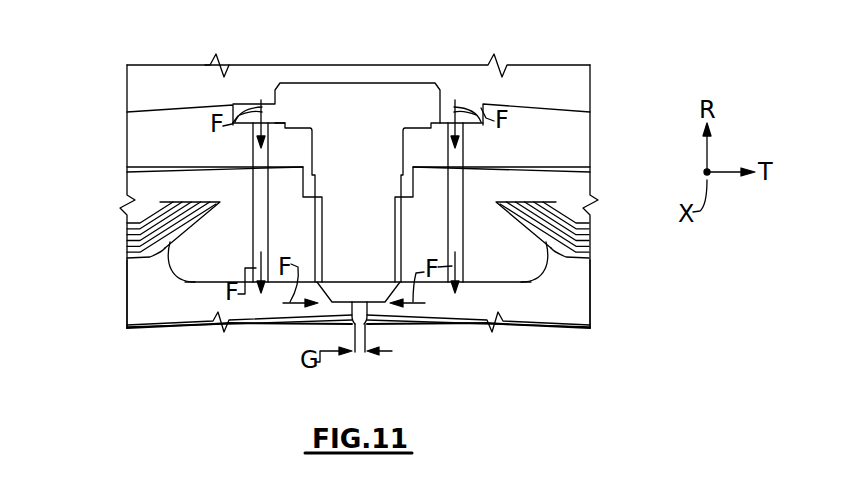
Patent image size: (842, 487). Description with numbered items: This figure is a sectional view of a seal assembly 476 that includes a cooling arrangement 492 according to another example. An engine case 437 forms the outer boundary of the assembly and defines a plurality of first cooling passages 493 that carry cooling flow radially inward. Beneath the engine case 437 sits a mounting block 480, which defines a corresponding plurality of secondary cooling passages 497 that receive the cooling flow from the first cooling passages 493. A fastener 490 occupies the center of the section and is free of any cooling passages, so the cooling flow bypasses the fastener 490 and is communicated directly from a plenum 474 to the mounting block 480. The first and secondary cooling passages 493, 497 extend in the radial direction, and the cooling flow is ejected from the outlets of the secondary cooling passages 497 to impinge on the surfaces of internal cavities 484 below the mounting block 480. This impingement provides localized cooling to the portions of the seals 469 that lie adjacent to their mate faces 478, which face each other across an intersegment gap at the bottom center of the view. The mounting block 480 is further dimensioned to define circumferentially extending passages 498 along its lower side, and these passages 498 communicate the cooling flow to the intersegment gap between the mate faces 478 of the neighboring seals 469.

The engine case 437 is at (578, 80).
The cooling arrangement 492 is at (210, 58).
The fastener 490 is at (416, 83).
The seal assembly 476 is at (138, 148).
The plenum 474 is at (243, 106).
The mounting block 480 is at (220, 160).
The first cooling passages 493 is at (253, 163).
The seals 469 is at (124, 214).
The secondary cooling passages 497 is at (253, 240).
The internal cavities 484 is at (124, 292).
The circumferentially extending passages 498 is at (207, 313).
The mate faces 478 is at (355, 352).